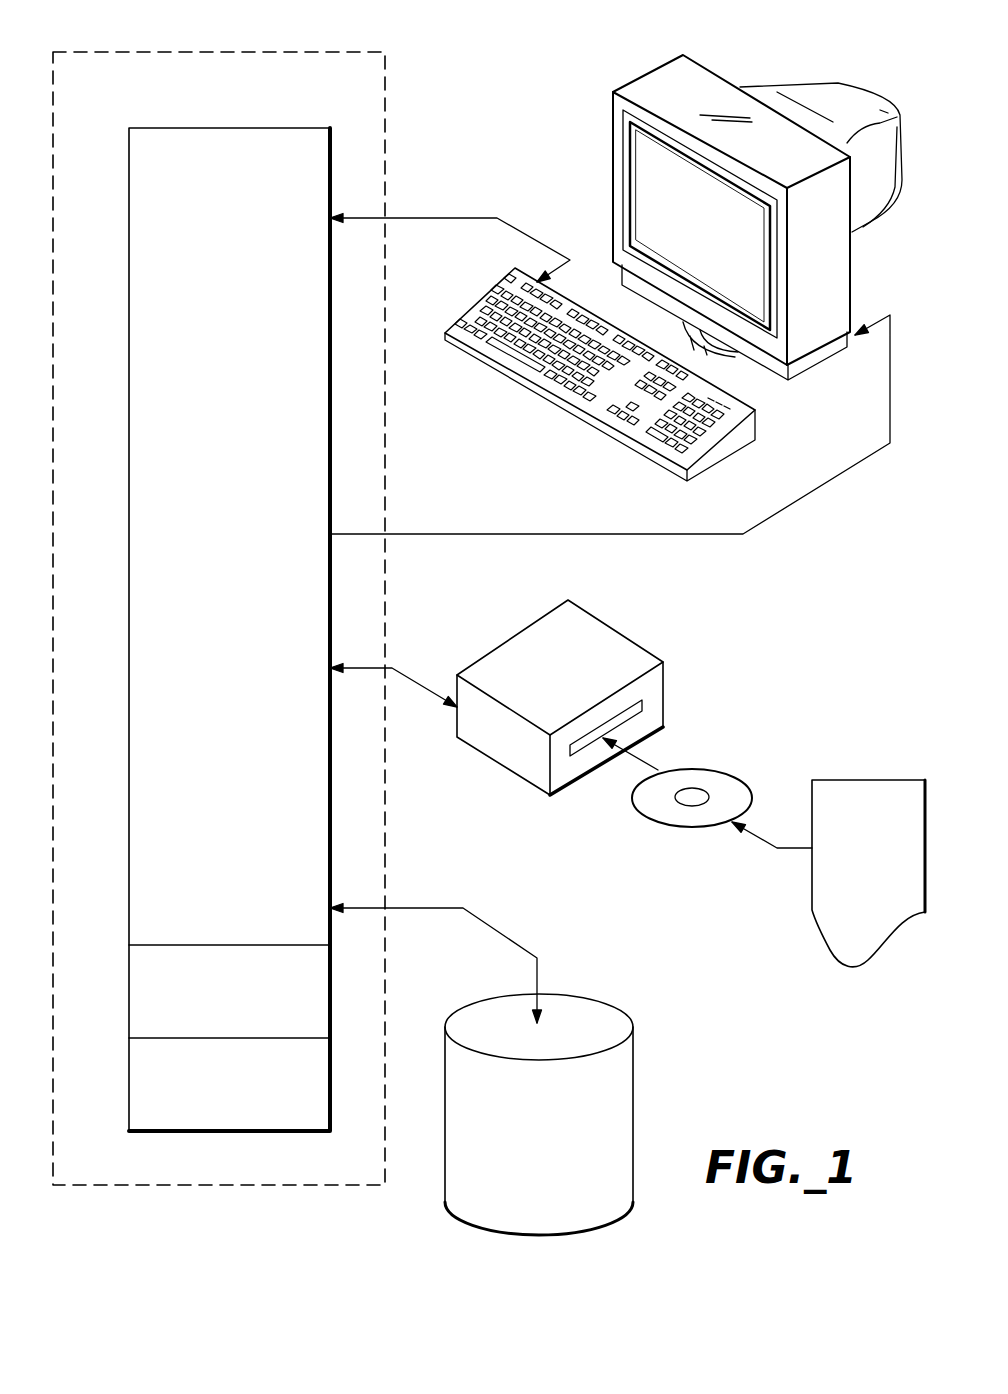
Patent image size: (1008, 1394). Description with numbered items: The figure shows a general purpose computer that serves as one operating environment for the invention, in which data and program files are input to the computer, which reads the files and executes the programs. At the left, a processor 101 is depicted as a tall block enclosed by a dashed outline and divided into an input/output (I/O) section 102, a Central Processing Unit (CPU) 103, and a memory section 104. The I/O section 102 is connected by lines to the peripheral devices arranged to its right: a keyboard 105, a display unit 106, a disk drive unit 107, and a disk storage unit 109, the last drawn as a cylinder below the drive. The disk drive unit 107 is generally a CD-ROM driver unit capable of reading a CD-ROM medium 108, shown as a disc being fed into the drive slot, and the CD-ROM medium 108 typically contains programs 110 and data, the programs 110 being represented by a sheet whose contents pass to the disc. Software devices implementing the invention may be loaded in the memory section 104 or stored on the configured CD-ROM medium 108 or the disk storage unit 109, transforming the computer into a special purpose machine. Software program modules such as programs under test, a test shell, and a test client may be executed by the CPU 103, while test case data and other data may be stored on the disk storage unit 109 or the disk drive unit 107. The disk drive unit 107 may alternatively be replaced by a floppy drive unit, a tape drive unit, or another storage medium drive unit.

The processor 101 is at (223, 52).
The input/output (I/O) section 102 is at (150, 552).
The Central Processing Unit (CPU) 103 is at (152, 1008).
The memory section 104 is at (152, 1094).
The keyboard 105 is at (600, 432).
The display unit 106 is at (713, 97).
The disk drive unit 107 is at (668, 678).
The CD-ROM medium 108 is at (738, 777).
The disk storage unit 109 is at (617, 1088).
The programs 110 is at (855, 780).